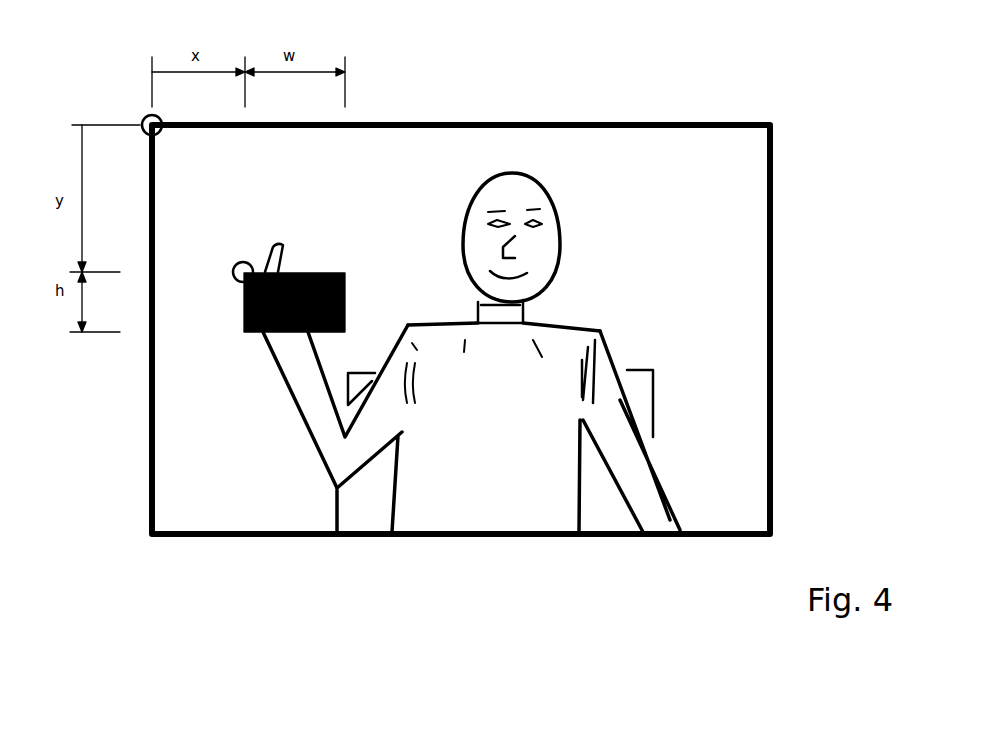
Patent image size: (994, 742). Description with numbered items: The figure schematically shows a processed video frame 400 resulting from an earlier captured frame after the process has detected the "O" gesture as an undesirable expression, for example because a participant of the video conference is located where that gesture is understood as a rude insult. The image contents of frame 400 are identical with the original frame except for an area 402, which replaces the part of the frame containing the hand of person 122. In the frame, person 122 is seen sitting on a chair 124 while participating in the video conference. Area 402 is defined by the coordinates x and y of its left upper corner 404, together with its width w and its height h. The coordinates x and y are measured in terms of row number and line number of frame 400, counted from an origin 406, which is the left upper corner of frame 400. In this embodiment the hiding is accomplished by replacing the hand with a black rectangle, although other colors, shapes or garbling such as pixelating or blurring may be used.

The frame 400 is at (773, 122).
The area 402 is at (320, 270).
The left upper corner 404 is at (242, 261).
The origin 406 is at (148, 116).
The person 122 is at (555, 328).
The chair 124 is at (645, 385).